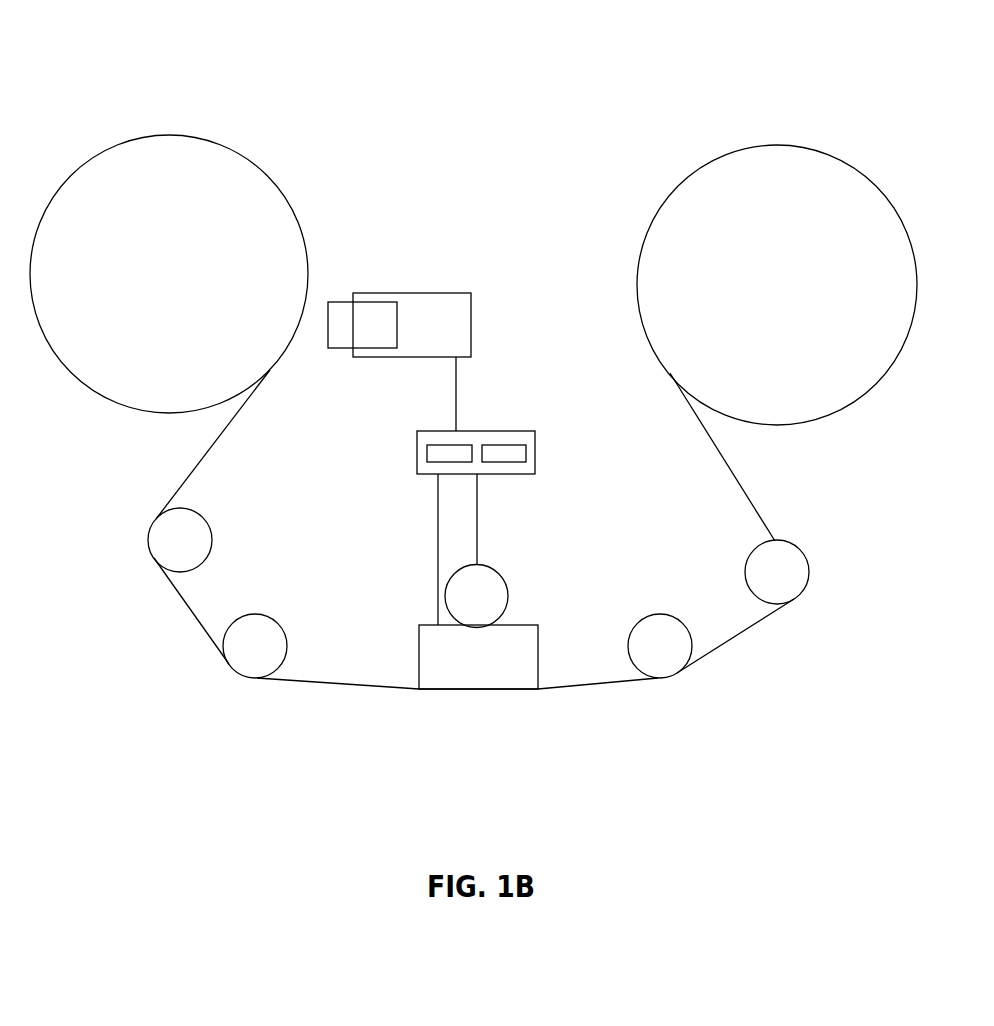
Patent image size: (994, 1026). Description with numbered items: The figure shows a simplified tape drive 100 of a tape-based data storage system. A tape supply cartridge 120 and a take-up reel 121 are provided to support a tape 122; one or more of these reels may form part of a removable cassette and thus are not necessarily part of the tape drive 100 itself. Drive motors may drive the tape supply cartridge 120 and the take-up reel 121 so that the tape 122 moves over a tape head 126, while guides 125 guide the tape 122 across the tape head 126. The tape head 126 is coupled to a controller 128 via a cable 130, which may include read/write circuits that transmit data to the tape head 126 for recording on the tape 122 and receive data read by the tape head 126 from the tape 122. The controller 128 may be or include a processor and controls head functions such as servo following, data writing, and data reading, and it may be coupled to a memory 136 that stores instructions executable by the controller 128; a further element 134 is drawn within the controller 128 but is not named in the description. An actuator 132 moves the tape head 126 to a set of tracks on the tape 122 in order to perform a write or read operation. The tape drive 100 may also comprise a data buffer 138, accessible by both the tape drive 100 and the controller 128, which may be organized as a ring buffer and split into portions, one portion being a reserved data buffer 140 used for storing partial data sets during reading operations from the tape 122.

The tape drive 100 is at (519, 116).
The tape supply cartridge 120 is at (297, 217).
The take-up reel 121 is at (834, 417).
The tape 122 is at (345, 687).
The guides 125 is at (255, 613).
The tape head 126 is at (538, 657).
The controller 128 is at (476, 431).
The cable 130 is at (438, 593).
The actuator 132 is at (498, 570).
The write element 134 is at (513, 445).
The memory 136 is at (438, 445).
The data buffer 138 is at (418, 293).
The reserved data buffer 140 is at (380, 337).